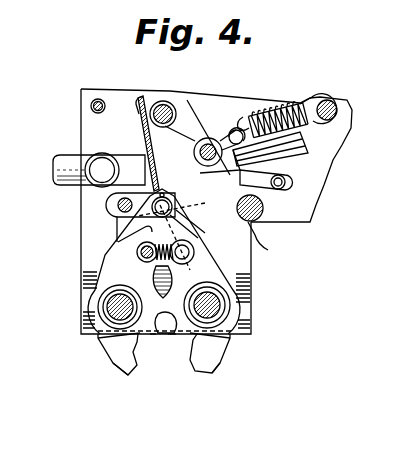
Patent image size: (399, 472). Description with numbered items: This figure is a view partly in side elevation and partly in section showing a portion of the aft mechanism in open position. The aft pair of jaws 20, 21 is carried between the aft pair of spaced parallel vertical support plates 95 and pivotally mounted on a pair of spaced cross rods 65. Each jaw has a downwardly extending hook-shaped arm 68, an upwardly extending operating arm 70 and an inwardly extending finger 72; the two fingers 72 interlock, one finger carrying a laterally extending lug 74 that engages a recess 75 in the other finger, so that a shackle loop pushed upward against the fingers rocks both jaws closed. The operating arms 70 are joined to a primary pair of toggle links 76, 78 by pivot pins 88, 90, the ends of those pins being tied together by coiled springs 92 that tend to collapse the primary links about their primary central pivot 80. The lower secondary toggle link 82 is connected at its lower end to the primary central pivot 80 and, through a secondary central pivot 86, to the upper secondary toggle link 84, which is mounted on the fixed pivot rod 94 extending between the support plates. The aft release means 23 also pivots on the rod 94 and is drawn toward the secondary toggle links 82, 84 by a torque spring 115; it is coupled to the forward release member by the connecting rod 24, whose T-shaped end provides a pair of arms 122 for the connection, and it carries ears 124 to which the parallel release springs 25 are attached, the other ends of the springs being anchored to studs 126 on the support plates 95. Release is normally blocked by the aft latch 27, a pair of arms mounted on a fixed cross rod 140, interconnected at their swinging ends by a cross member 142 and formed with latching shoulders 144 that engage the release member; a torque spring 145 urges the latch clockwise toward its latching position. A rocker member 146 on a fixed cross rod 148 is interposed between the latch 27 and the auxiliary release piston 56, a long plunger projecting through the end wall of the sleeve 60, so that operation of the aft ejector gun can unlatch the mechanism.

The aft jaw 20 is at (121, 371).
The aft jaw 21 is at (212, 374).
The aft release means 23 is at (188, 99).
The connecting rod 24 is at (57, 162).
The release springs 25 is at (300, 103).
The aft latch 27 is at (246, 223).
The auxiliary release piston 56 is at (300, 141).
The sleeve 60 is at (335, 155).
The cross rods 65 is at (112, 308).
The hook-shaped arms 68 is at (108, 353).
The operating arms 70 is at (110, 277).
The fingers 72 is at (175, 300).
The lug 74 is at (152, 335).
The recess 75 is at (172, 335).
The primary toggle link 76 is at (136, 229).
The primary toggle link 78 is at (195, 231).
The primary central pivot 80 is at (176, 206).
The secondary toggle link 82 is at (150, 160).
The secondary toggle link 84 is at (190, 135).
The secondary central pivot 86 is at (238, 131).
The pivot pin 88 is at (137, 253).
The pivot pin 90 is at (196, 249).
The coiled springs 92 is at (153, 264).
The fixed pivot rod 94 is at (168, 102).
The aft support plates 95 is at (115, 96).
The torque spring 115 is at (143, 96).
The arms 122 is at (119, 163).
The ears 124 is at (243, 117).
The studs 126 is at (333, 101).
The fixed cross rod 140 is at (112, 205).
The cross member 142 is at (262, 222).
The latching shoulders 144 is at (295, 167).
The torque spring 145 is at (116, 228).
The rocker member 146 is at (272, 190).
The fixed cross rod 148 is at (296, 184).